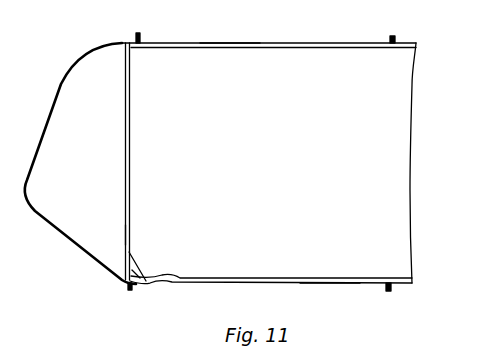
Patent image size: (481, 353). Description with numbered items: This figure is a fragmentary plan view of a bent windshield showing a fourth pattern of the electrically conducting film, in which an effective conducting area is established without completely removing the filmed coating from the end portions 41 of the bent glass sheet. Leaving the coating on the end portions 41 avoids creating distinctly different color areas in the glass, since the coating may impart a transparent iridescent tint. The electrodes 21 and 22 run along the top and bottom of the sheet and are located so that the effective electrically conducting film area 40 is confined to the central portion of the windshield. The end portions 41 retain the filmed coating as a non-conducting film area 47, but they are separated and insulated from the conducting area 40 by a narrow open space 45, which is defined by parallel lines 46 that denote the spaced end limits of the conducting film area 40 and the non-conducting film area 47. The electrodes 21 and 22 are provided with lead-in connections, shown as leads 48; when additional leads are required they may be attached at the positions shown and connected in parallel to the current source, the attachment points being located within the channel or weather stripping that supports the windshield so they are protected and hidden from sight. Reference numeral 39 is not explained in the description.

The electrode 21 is at (227, 43).
The electrode 22 is at (330, 283).
The card body 39 is at (287, 29).
The effective electrically conducting film area 40 is at (309, 76).
The end portions of the bent sheet 41 is at (63, 98).
The narrow open area 45 is at (118, 268).
The parallel lines 46 is at (125, 232).
The non-conducting film area 47 is at (77, 208).
The lead 48 is at (142, 36).